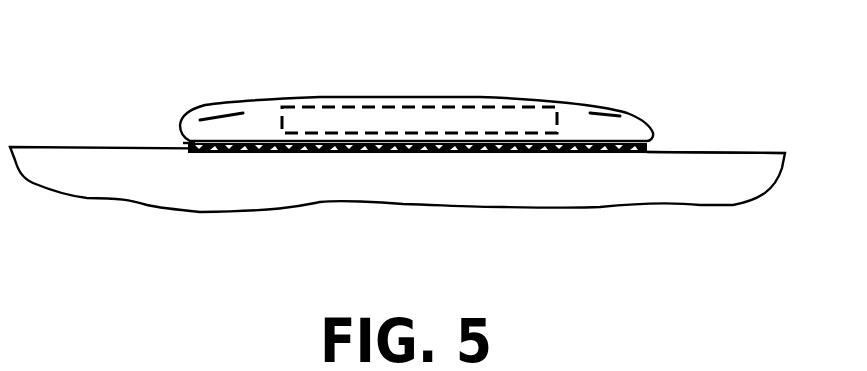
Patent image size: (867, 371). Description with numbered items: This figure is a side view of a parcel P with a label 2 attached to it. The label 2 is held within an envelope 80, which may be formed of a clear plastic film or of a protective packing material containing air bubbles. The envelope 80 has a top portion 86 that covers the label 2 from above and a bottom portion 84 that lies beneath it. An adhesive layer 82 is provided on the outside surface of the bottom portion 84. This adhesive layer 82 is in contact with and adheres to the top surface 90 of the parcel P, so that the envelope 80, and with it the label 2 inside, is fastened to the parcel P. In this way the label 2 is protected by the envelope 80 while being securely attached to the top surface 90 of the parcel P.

The label 2 is at (500, 73).
The envelope 80 is at (612, 127).
The adhesive layer 82 is at (186, 146).
The bottom portion 84 is at (281, 153).
The top portion 86 is at (236, 99).
The top surface 90 is at (738, 153).
The parcel P is at (645, 187).